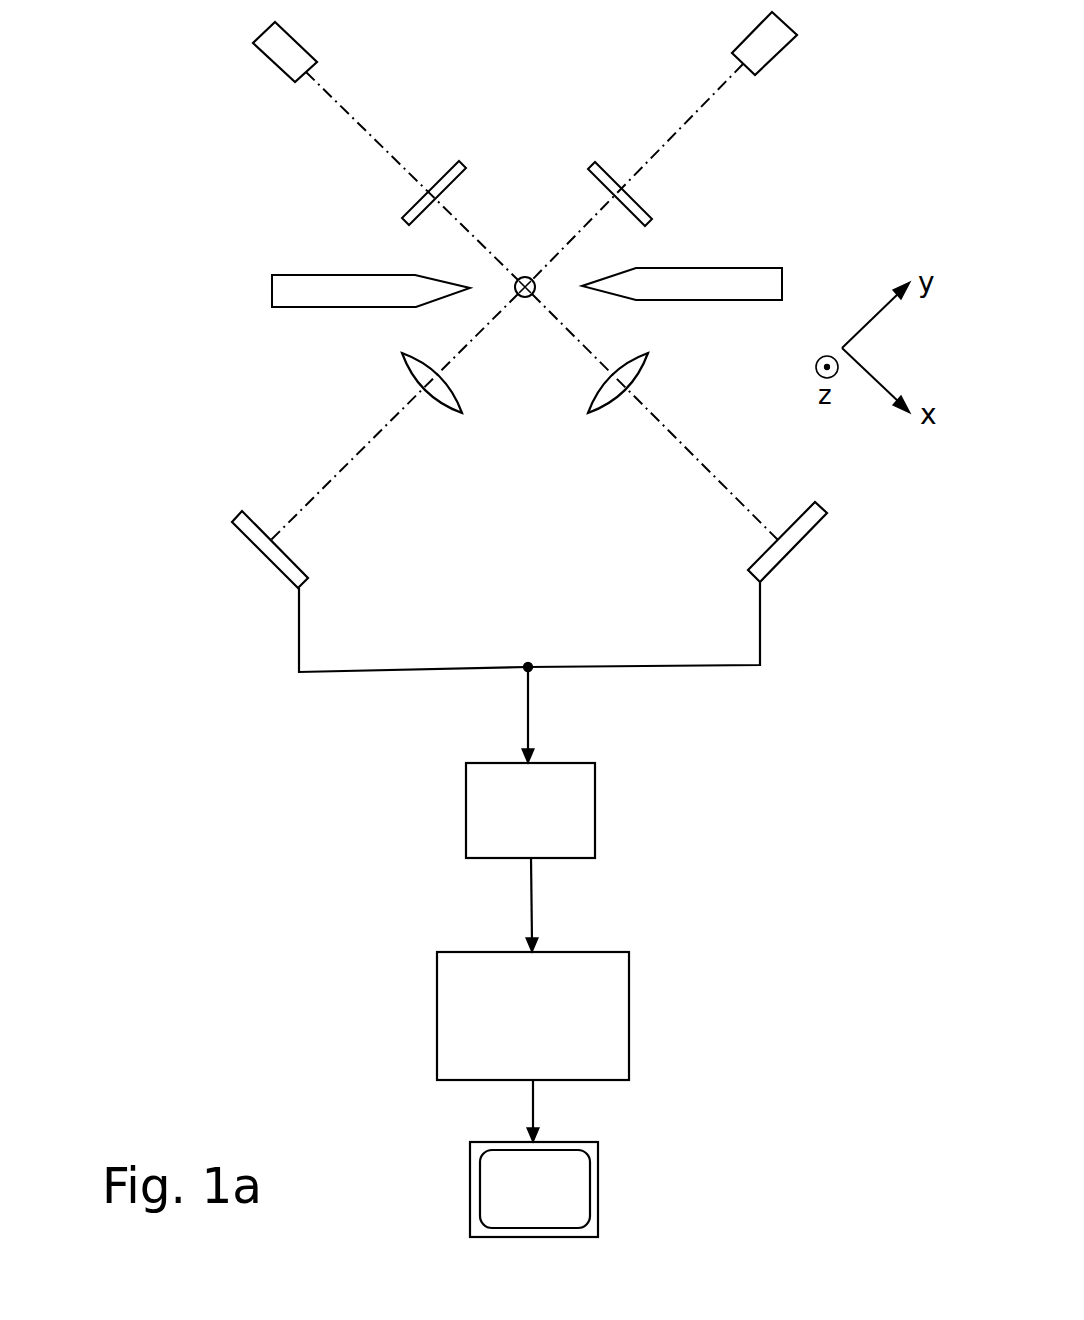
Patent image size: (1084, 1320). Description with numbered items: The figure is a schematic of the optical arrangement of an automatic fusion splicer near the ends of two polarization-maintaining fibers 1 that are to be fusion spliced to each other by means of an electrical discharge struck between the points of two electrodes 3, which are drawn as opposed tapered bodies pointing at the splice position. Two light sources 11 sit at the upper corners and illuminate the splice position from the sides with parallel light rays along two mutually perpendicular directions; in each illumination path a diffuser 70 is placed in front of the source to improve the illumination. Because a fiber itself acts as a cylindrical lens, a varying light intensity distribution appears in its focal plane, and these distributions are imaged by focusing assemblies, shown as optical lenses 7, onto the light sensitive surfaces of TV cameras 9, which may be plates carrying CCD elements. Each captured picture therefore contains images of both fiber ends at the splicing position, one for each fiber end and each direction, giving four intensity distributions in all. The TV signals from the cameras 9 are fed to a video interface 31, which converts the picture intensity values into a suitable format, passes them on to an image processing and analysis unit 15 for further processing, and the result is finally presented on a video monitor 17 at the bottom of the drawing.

The PM fiber 1 is at (518, 276).
The electrode 3 is at (293, 275).
The optical lens 7 is at (412, 372).
The TV camera 9 is at (247, 540).
The light source 11 is at (291, 41).
The image processing and analysis unit 15 is at (622, 969).
The video monitor 17 is at (596, 1150).
The video interface 31 is at (593, 780).
The diffuser 70 is at (445, 173).